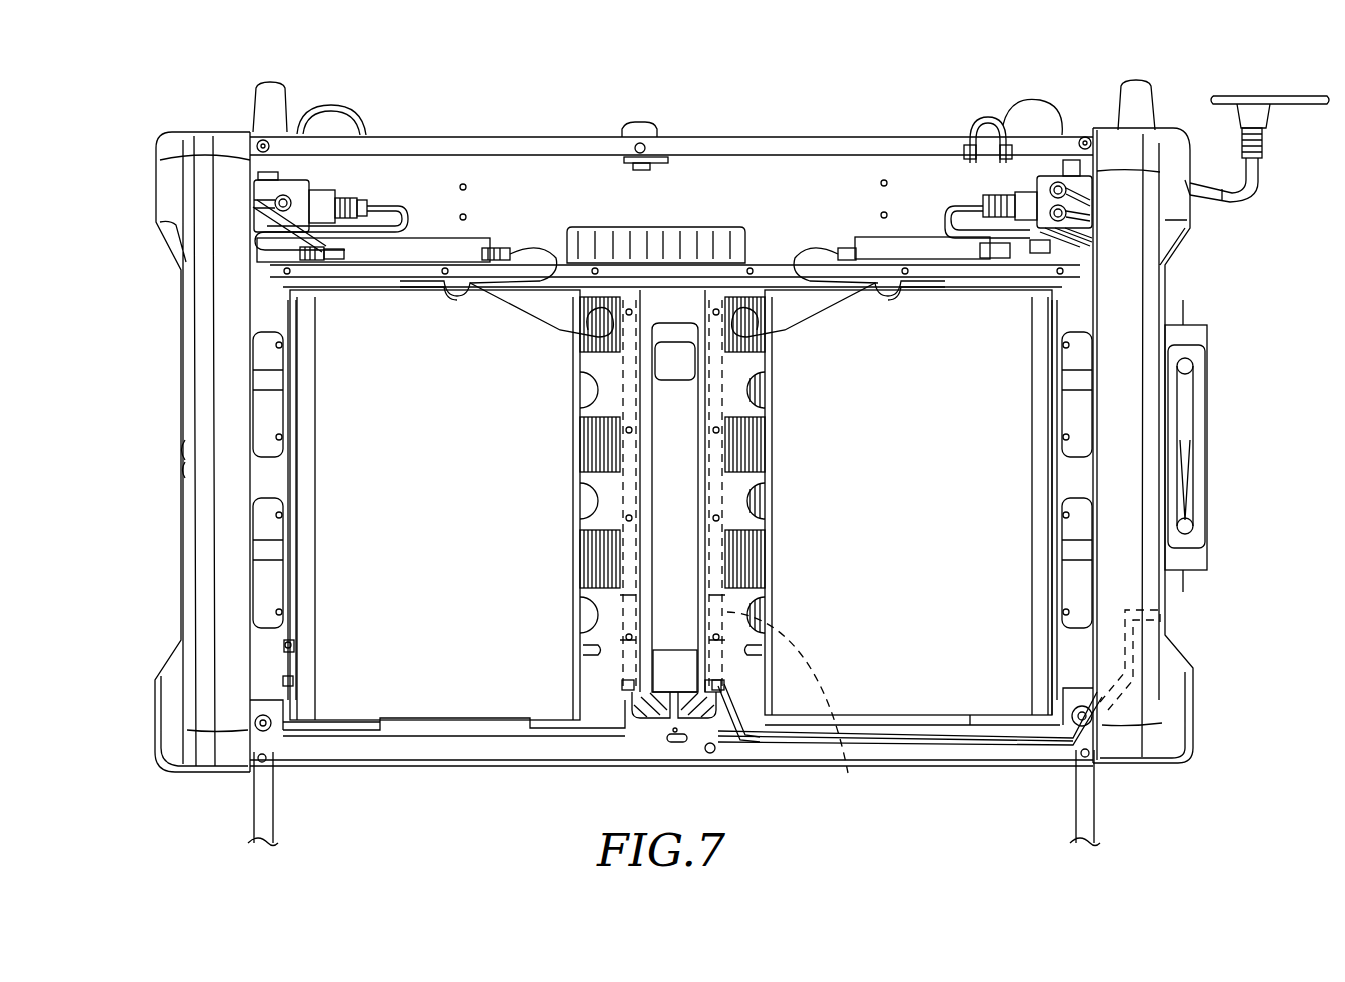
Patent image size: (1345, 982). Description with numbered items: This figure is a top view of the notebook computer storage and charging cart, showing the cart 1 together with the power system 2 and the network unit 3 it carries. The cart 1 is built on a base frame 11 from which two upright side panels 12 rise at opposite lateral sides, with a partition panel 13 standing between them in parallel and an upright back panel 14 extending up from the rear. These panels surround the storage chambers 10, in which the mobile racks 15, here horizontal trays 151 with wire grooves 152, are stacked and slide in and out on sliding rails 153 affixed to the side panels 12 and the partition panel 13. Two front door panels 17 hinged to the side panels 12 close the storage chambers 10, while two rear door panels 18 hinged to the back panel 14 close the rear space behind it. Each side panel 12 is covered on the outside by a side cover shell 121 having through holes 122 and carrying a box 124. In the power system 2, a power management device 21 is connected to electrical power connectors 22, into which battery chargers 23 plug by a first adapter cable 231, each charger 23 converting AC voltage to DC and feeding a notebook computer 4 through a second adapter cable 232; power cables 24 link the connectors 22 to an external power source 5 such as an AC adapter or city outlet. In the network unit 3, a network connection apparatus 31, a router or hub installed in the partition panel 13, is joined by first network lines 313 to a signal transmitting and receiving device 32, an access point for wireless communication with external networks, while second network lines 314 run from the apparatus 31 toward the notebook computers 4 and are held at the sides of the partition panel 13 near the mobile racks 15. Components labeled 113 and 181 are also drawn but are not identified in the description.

The cart 1 is at (180, 400).
The power system 2 is at (657, 228).
The network unit 3 is at (704, 798).
The notebook computer 4 is at (449, 698).
The external power source 5 is at (1296, 100).
The storage chambers 10 is at (422, 740).
The base frame 11 is at (608, 745).
The upright side panels 12 is at (258, 312).
The partition panel 13 is at (643, 297).
The upright back panel 14 is at (560, 272).
The mobile racks 15 is at (560, 729).
The front door panels 17 is at (256, 818).
The rear door panels 18 is at (843, 148).
The power management device 21 is at (622, 240).
The electrical power connectors 22 is at (250, 189).
The battery chargers 23 is at (396, 248).
The power cables 24 is at (1023, 196).
The network connection apparatus 31 is at (675, 640).
The signal transmitting and receiving device 32 is at (1205, 432).
The pivot 113 is at (722, 688).
The side cover shells 121 is at (212, 335).
The through holes 122 is at (1190, 196).
The box 124 is at (1208, 341).
The horizontal trays 151 is at (362, 722).
The wire grooves 152 is at (462, 290).
The sliding rails 153 is at (286, 686).
The bracket 181 is at (637, 124).
The first adapter cable 231 is at (323, 206).
The second adapter cable 232 is at (449, 290).
The first network lines 313 is at (922, 740).
The second network lines 314 is at (800, 710).